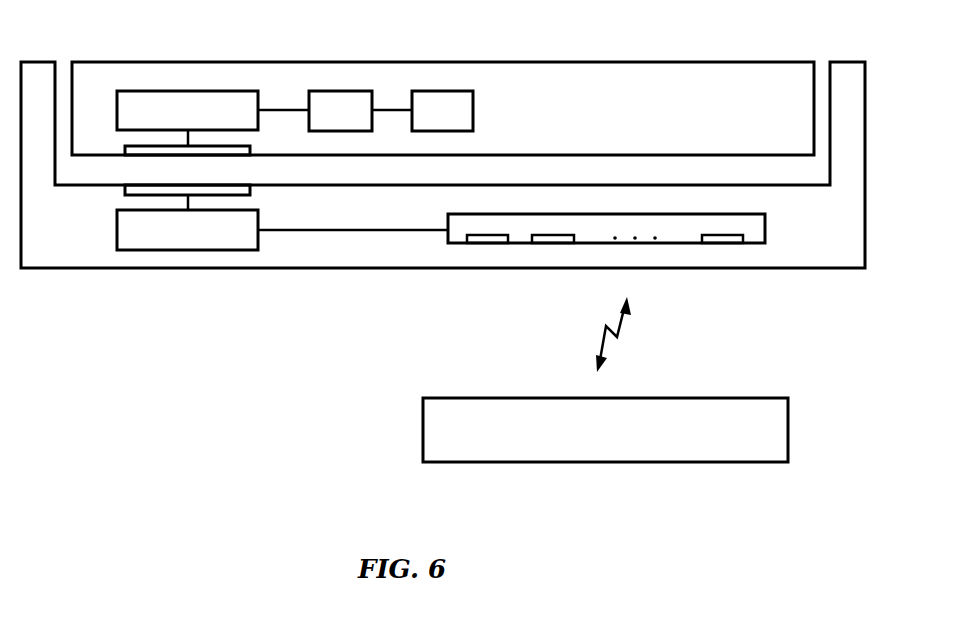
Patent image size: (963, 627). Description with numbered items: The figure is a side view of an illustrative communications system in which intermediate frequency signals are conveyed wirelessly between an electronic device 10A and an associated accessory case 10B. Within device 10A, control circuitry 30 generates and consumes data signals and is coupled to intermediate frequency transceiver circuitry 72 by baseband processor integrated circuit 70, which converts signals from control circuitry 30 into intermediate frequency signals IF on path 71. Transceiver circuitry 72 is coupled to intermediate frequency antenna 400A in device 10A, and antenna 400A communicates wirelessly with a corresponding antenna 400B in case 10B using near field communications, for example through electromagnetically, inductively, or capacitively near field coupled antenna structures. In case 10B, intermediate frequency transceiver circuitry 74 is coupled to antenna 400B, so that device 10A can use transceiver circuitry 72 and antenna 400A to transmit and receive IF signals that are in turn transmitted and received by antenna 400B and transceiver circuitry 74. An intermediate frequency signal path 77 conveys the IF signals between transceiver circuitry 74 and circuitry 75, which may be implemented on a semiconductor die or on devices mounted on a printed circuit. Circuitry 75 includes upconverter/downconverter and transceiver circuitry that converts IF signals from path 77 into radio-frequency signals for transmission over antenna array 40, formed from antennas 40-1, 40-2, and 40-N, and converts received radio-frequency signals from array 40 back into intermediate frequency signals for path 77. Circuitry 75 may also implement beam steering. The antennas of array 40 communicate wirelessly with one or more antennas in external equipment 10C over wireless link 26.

The device 10A is at (598, 80).
The case 10B is at (68, 269).
The external equipment 10C is at (423, 425).
The wireless link 26 is at (620, 334).
The control circuitry 30 is at (436, 91).
The antenna array 40 is at (583, 272).
The antenna 40-1 is at (497, 243).
The antenna 40-2 is at (552, 243).
The antenna 40-N is at (722, 243).
The baseband processor integrated circuit 70 is at (338, 91).
The path 71 is at (293, 112).
The intermediate frequency transceiver circuitry 72 is at (205, 91).
The intermediate frequency transceiver circuitry 74 is at (230, 251).
The circuitry 75 is at (448, 238).
The intermediate frequency signal path 77 is at (328, 232).
The intermediate frequency antenna 400A is at (125, 148).
The antenna 400B is at (125, 190).